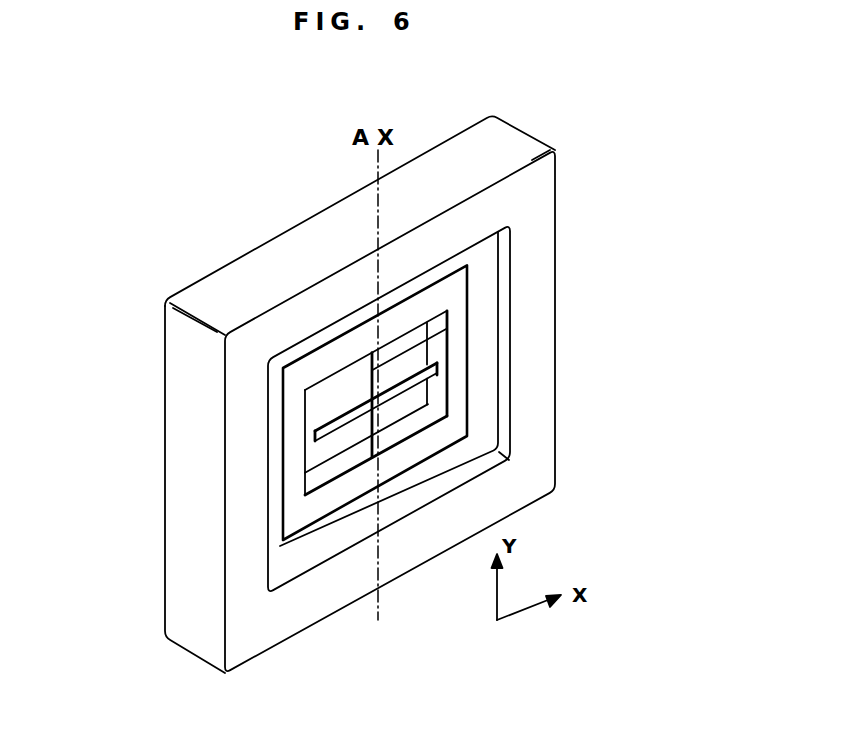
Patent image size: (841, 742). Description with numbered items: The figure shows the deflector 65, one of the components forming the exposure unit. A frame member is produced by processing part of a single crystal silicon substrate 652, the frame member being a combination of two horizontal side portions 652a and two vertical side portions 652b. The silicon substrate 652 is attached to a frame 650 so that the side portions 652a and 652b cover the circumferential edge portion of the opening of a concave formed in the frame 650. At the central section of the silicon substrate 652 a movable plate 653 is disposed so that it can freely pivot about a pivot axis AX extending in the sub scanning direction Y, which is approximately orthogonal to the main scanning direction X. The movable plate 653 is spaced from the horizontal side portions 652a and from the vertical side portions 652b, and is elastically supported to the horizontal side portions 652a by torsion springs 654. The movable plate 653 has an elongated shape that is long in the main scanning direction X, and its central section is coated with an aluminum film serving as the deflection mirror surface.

The deflector 65 is at (509, 86).
The frame 650 is at (500, 137).
The silicon substrate 652 is at (458, 290).
The horizontal side portions 652a is at (340, 355).
The vertical side portions 652b is at (290, 469).
The movable plate 653 is at (388, 378).
The torsion springs 654 is at (437, 348).